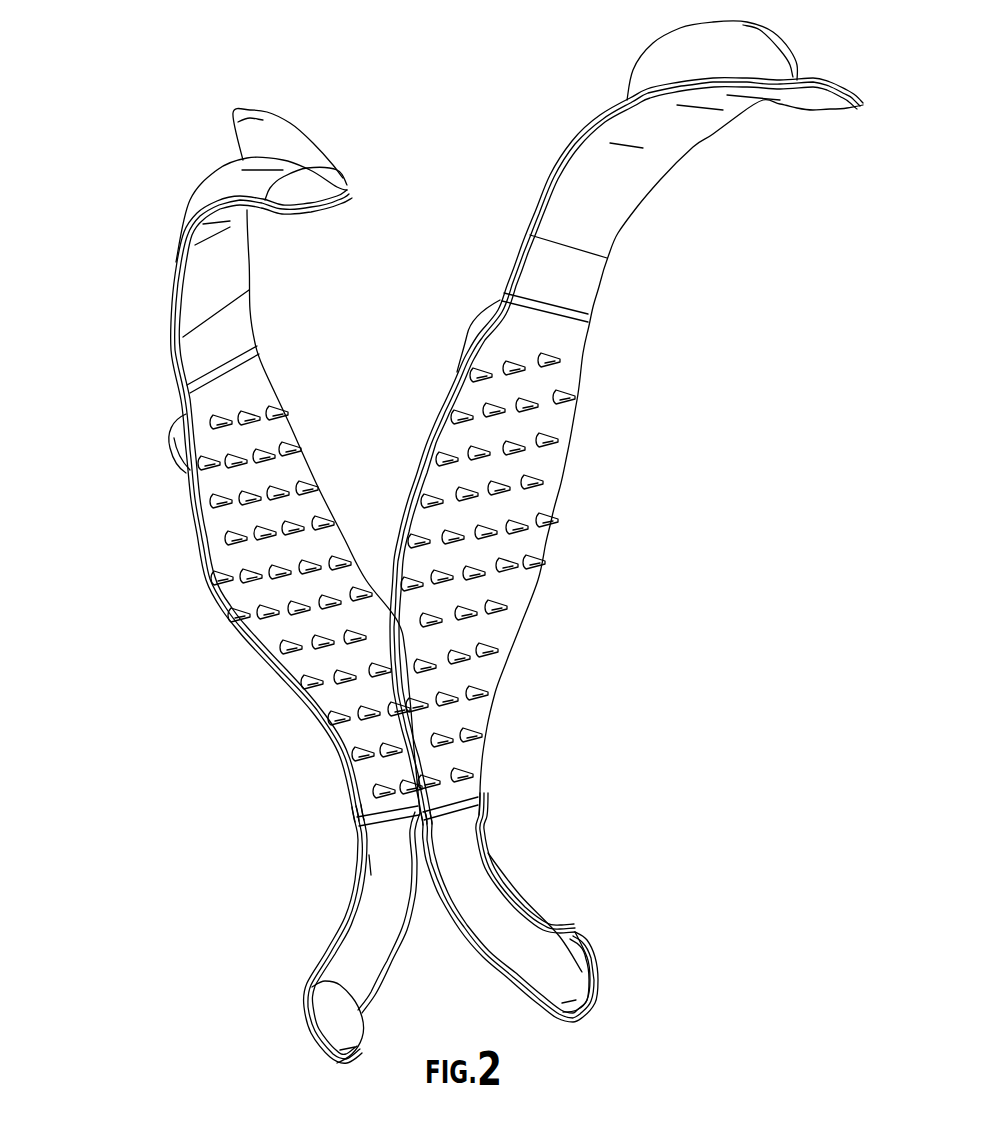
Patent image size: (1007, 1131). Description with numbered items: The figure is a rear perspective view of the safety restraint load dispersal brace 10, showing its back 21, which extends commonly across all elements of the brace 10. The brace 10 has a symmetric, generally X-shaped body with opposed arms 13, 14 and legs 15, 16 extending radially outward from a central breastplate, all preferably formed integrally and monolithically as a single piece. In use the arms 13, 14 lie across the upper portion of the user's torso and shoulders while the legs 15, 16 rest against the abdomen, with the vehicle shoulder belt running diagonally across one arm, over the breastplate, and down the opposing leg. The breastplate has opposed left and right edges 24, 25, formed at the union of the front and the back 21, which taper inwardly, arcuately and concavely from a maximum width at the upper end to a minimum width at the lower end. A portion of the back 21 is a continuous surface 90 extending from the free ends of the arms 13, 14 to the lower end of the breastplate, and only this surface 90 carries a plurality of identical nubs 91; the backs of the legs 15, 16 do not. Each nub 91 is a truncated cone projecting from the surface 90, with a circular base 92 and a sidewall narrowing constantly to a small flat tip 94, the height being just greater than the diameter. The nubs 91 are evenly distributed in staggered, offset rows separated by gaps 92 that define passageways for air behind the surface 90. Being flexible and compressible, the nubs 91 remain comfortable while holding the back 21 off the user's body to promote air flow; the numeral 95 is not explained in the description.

The brace 10 is at (97, 92).
The arm 13 is at (200, 572).
The arm 14 is at (585, 360).
The leg 15 is at (327, 955).
The leg 16 is at (558, 921).
The back 21 is at (540, 344).
The left edge 24 is at (345, 793).
The right edge 25 is at (480, 767).
The surface 90 is at (517, 592).
The nub 91 is at (555, 435).
The base 92 is at (548, 548).
The tip 94 is at (555, 518).
The abrasive teeth 95 is at (480, 677).